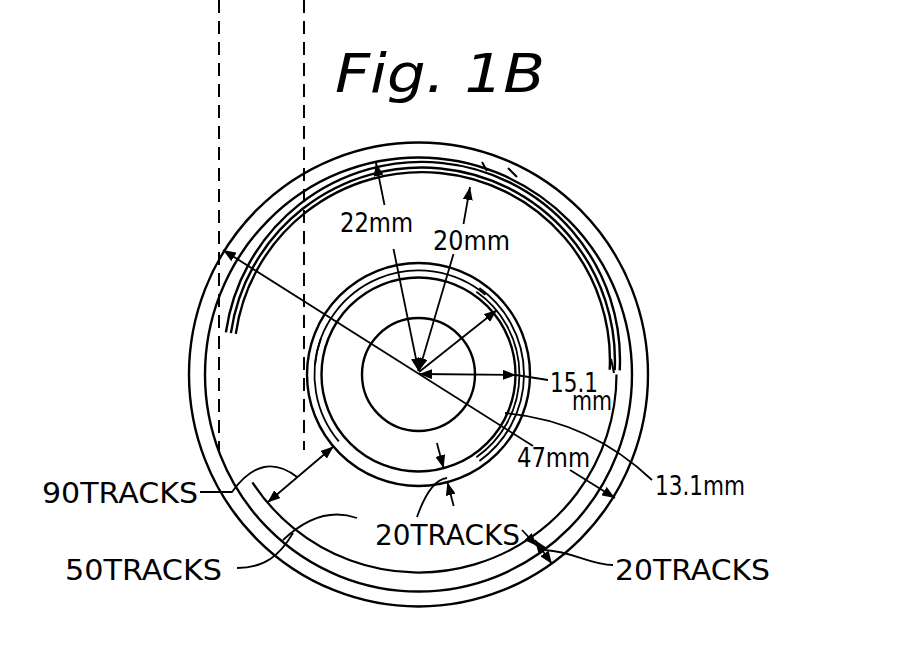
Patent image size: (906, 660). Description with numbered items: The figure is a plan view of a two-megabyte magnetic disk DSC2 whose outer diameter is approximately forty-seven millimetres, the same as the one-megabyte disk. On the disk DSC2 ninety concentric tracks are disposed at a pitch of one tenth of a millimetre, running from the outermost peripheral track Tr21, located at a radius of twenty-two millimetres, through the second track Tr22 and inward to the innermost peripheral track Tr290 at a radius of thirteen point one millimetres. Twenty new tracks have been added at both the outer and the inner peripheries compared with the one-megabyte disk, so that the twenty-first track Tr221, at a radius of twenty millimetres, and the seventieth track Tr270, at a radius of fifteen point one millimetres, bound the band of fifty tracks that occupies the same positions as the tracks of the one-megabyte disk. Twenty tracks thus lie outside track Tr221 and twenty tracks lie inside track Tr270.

The 2M byte disk DSC2 is at (291, 163).
The outermost peripheral track Tr21 is at (491, 166).
The second track Tr22 is at (507, 182).
The 21st track Tr221 is at (580, 243).
The 70th track Tr270 is at (500, 327).
The innermost peripheral track Tr290 is at (500, 358).